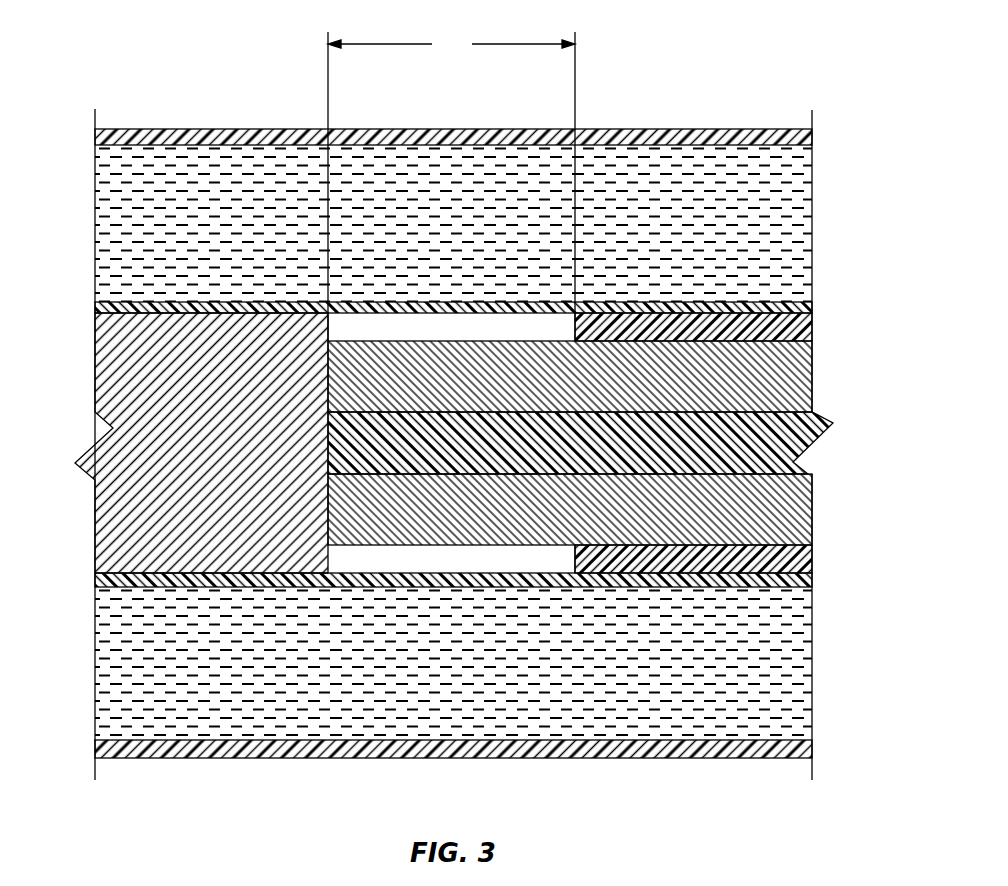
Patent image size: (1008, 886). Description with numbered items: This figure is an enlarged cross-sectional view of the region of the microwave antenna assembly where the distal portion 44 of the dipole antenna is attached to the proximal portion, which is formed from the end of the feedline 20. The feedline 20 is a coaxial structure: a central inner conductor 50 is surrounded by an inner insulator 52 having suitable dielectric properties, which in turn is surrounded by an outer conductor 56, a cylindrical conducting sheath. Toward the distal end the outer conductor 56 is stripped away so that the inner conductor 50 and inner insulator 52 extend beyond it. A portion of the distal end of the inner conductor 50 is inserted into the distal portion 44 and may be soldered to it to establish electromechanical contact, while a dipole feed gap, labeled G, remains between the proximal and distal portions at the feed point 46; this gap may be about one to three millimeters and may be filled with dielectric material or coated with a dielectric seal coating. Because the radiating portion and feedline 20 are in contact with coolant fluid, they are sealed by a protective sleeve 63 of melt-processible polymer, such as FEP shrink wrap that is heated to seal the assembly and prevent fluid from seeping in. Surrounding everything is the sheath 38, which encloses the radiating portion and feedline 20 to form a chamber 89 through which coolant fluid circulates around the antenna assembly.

The feedline 20 is at (453, 97).
The sheath 38 is at (800, 138).
The distal portion 44 is at (133, 395).
The feed point 46 is at (432, 325).
The inner conductor 50 is at (800, 431).
The inner insulator 52 is at (800, 381).
The outer conductor 56 is at (800, 331).
The protective sleeve 63 is at (800, 307).
The chamber 89 is at (287, 262).